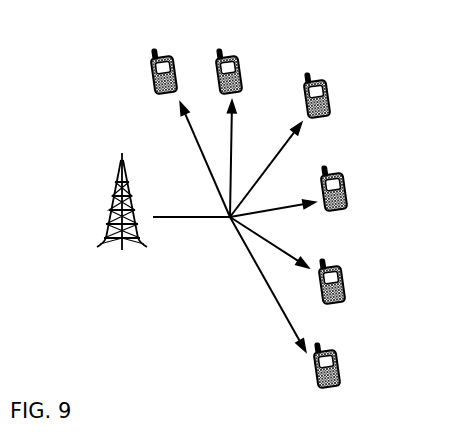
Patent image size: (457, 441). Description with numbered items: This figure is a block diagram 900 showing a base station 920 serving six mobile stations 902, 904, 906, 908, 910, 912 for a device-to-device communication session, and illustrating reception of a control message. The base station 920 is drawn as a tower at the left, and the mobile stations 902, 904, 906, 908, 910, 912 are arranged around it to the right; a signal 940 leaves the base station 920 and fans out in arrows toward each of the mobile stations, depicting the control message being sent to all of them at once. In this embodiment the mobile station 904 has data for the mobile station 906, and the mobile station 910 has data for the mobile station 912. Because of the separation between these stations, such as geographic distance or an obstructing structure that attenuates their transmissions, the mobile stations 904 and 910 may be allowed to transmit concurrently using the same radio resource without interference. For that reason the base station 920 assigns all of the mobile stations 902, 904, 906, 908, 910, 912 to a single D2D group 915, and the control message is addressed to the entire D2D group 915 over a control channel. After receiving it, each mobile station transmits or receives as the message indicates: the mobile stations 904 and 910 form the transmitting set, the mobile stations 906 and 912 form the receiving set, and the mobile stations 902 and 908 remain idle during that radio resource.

The block diagram 900 is at (58, 338).
The mobile station 902 is at (339, 357).
The mobile station 904 is at (344, 272).
The mobile station 906 is at (346, 180).
The mobile station 908 is at (329, 90).
The mobile station 910 is at (241, 63).
The mobile station 912 is at (176, 63).
The D2D group 915 is at (233, 362).
The base station 920 is at (90, 252).
The transmitted signal 940 is at (200, 218).